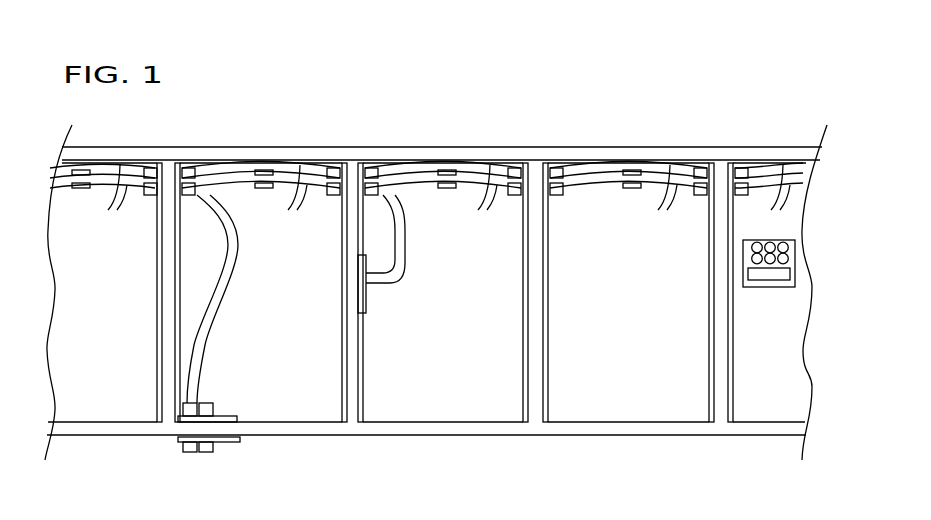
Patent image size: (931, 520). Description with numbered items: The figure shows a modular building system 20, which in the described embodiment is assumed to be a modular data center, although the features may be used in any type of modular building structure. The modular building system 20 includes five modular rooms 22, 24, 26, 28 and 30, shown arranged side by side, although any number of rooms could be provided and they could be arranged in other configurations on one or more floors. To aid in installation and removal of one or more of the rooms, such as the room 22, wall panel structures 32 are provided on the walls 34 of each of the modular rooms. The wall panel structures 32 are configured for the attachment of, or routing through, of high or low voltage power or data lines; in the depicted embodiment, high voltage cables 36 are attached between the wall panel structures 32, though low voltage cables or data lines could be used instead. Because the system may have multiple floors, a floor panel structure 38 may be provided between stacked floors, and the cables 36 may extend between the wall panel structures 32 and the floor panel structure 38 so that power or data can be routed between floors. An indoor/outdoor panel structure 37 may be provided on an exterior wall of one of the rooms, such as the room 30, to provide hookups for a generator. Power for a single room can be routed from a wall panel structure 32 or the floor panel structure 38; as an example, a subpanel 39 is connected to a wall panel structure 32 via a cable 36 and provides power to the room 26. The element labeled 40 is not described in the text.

The modular building system 20 is at (433, 55).
The modular room 22 is at (117, 393).
The modular room 24 is at (319, 393).
The modular room 26 is at (495, 393).
The modular room 28 is at (657, 393).
The modular room 30 is at (779, 393).
The wall panel structure 32 is at (195, 149).
The wall 34 is at (180, 282).
The high voltage cable 36 is at (108, 210).
The indoor/outdoor panel structure 37 is at (748, 257).
The floor panel structure 38 is at (240, 395).
The subpanel 39 is at (365, 302).
The lower rail 40 is at (418, 435).